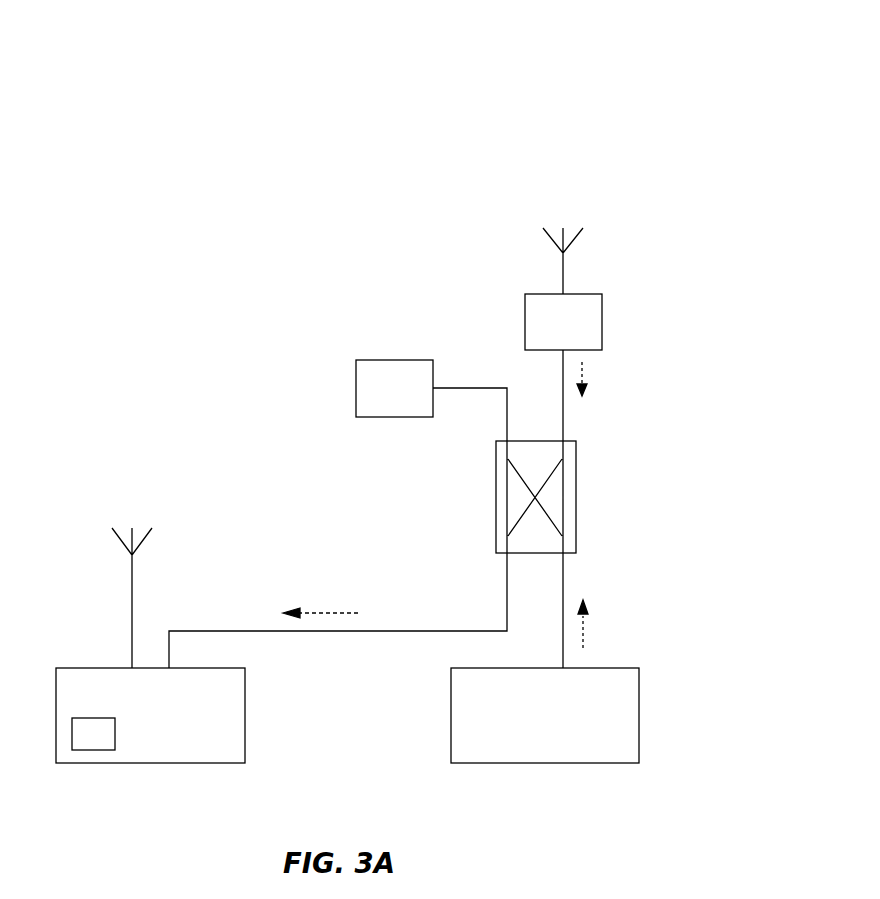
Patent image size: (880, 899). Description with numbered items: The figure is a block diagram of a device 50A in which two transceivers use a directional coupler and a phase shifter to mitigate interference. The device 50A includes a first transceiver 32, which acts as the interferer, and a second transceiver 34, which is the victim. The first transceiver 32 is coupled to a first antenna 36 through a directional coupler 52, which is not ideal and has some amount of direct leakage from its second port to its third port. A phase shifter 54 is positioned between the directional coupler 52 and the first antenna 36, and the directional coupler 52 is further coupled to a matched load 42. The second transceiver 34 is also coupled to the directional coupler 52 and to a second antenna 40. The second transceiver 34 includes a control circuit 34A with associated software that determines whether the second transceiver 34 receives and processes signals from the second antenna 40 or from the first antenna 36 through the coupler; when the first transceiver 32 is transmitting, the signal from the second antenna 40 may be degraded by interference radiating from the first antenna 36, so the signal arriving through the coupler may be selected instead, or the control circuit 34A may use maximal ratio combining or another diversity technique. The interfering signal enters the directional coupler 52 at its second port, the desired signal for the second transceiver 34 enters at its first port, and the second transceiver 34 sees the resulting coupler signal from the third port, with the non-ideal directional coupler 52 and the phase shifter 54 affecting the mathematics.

The device 50A is at (663, 133).
The first antenna 36 is at (573, 240).
The phase shifter 54 is at (602, 318).
The matched load 42 is at (392, 360).
The directional coupler 52 is at (577, 486).
The second antenna 40 is at (121, 543).
The second transceiver 34 is at (160, 735).
The control circuit 34A is at (92, 752).
The first transceiver 32 is at (557, 735).